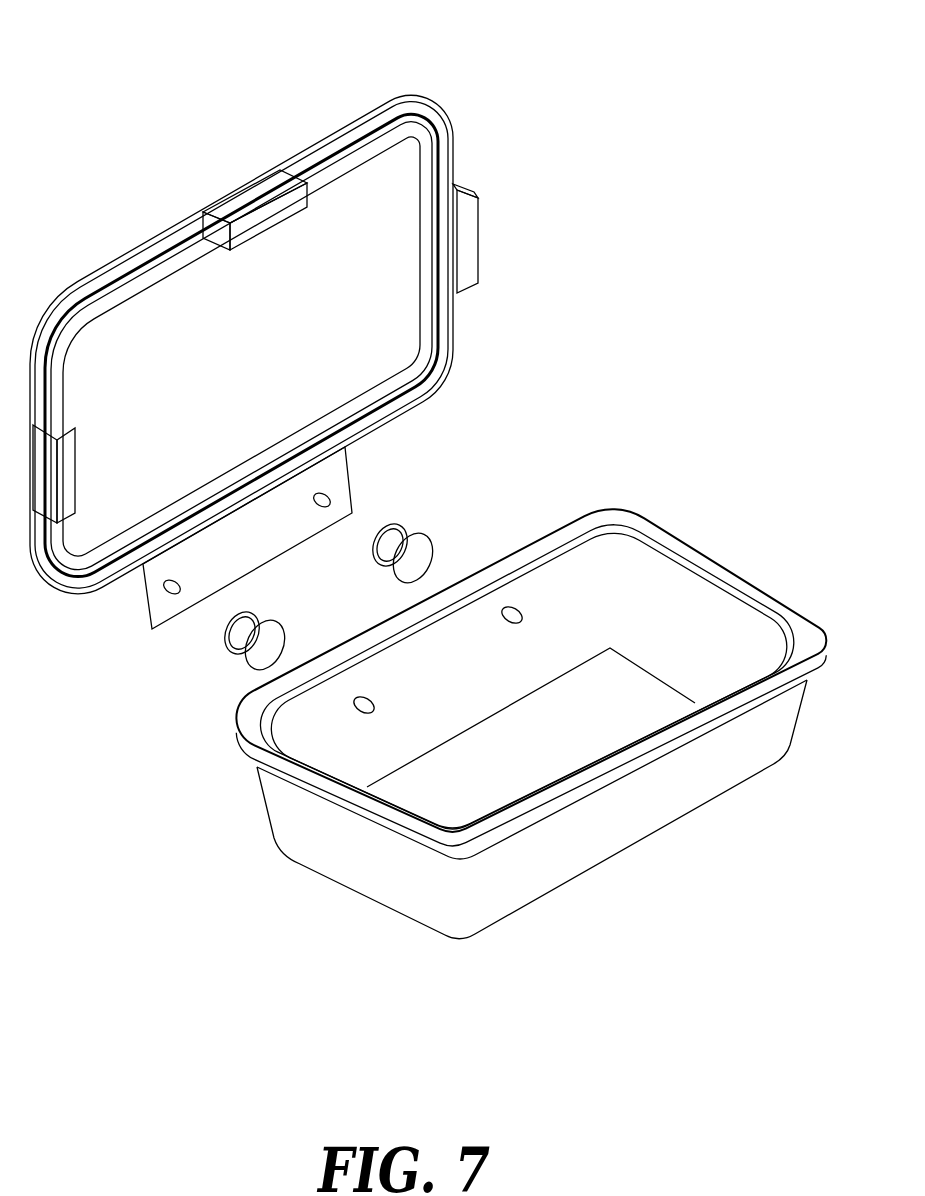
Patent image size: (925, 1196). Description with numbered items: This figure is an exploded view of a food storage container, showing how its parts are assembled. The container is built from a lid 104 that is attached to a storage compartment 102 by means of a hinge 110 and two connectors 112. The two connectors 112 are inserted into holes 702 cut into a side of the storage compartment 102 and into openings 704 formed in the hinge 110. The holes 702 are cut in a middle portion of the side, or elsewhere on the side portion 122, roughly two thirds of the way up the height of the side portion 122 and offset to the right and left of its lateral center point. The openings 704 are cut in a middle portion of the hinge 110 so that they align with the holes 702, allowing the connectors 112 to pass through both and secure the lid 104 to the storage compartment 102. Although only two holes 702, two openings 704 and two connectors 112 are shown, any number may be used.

The storage compartment 102 is at (531, 727).
The lid 104 is at (153, 175).
The hinge 110 is at (168, 622).
The connectors 112 is at (380, 573).
The side portion 122 is at (570, 845).
The holes 702 is at (438, 679).
The openings 704 is at (180, 585).